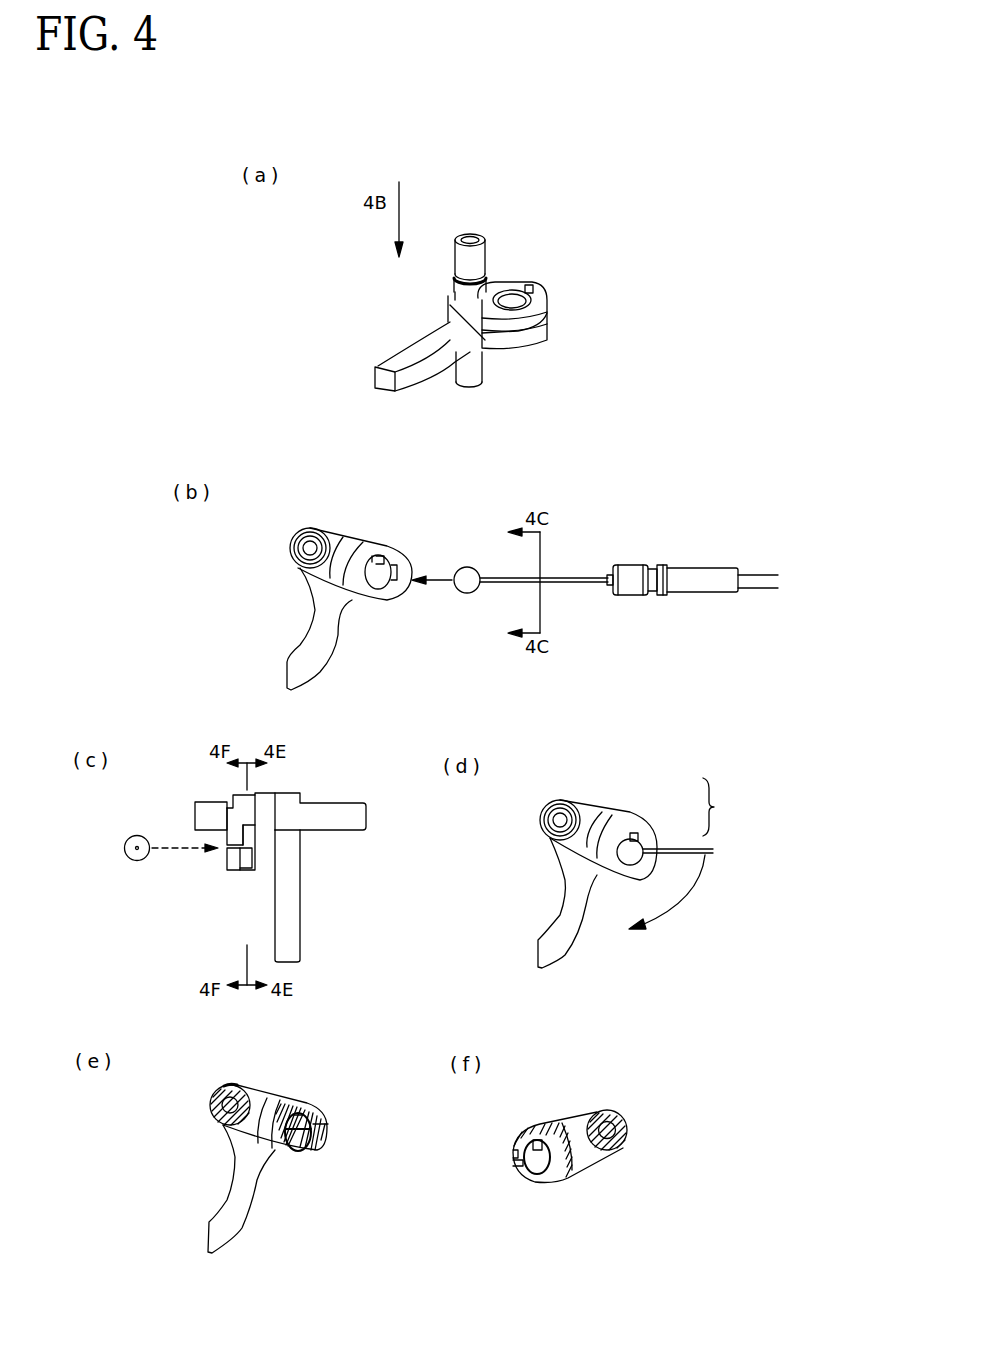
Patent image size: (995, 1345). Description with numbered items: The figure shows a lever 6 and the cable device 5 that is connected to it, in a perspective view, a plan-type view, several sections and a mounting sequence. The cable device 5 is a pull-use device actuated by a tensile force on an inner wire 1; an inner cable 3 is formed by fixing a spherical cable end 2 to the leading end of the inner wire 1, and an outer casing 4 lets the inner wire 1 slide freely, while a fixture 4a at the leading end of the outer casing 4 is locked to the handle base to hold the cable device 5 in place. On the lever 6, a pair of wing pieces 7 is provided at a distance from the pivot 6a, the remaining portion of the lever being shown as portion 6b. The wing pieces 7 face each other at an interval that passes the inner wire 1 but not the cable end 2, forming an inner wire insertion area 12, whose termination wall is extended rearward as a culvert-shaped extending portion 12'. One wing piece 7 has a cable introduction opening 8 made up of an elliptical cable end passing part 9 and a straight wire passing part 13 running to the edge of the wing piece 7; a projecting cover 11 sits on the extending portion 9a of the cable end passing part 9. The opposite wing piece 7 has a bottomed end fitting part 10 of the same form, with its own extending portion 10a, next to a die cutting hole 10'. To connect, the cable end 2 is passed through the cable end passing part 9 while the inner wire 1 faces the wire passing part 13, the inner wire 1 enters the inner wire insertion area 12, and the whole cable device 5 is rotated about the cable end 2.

The inner wire 1 is at (583, 577).
The cable end 2 is at (468, 567).
The inner cable 3 is at (716, 807).
The outer casing 4 is at (705, 577).
The fixture 4a is at (660, 598).
The cable device 5 is at (661, 540).
The lever 6 is at (560, 282).
The pivot 6a is at (471, 252).
The lever arm 6b is at (398, 391).
The wing pieces 7 is at (547, 305).
The cable introduction opening 8 is at (510, 290).
The cable end passing part 9 is at (381, 585).
The extending portion 9a is at (373, 553).
The end fitting part 10 is at (324, 1150).
The die cutting hole 10' is at (331, 1079).
The extending portion 10a is at (311, 1130).
The cover 11 is at (533, 290).
The inner wire insertion area 12 is at (404, 1046).
The culvert-shaped extending portion 12' is at (380, 958).
The wire passing part 13 is at (547, 320).